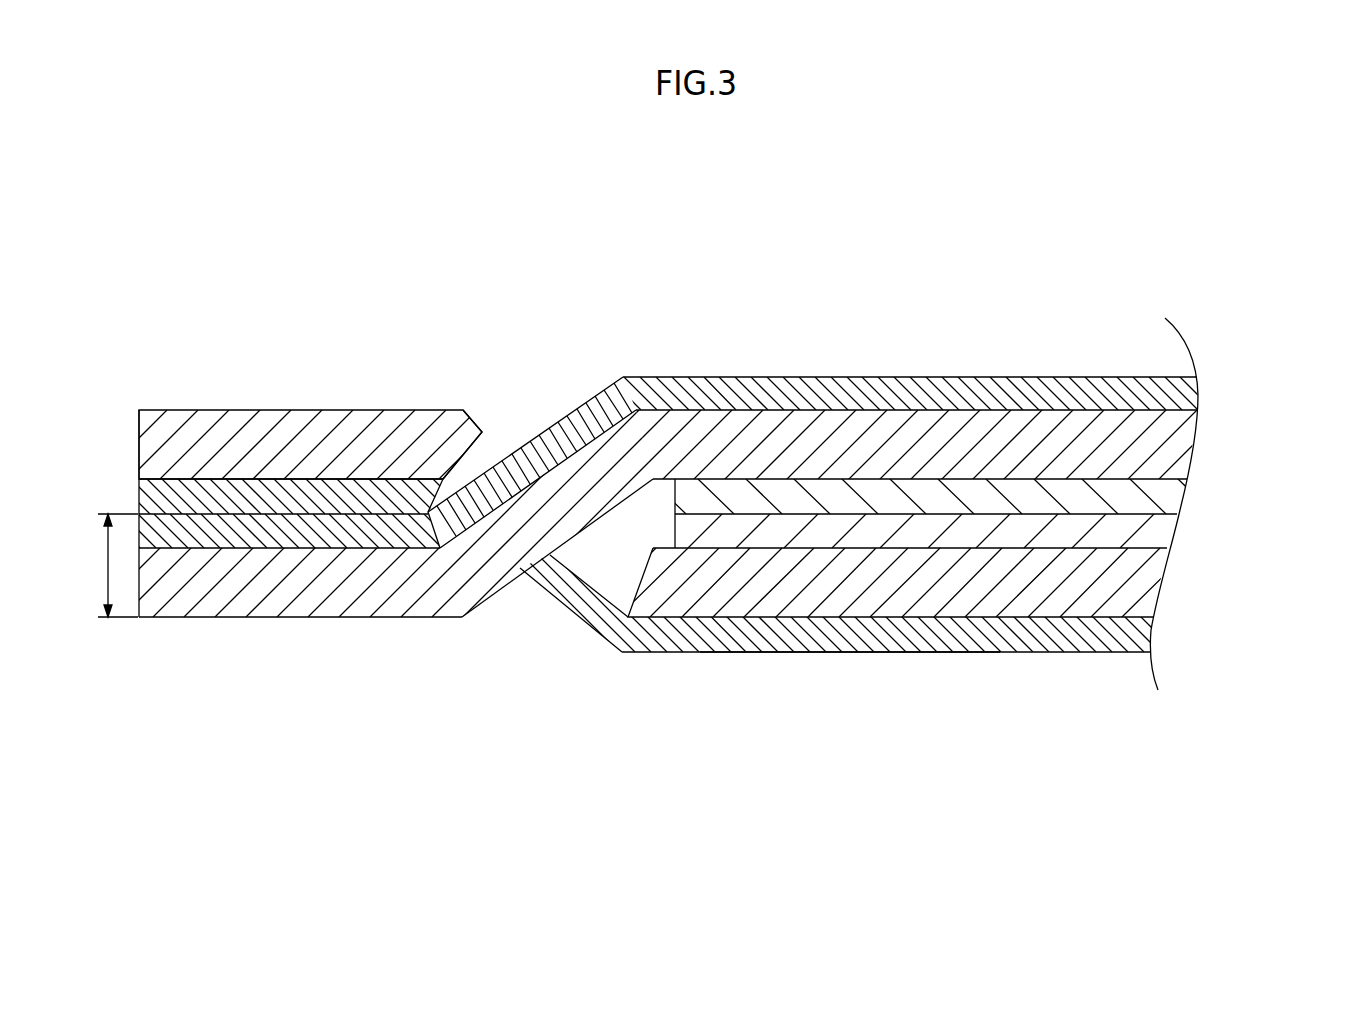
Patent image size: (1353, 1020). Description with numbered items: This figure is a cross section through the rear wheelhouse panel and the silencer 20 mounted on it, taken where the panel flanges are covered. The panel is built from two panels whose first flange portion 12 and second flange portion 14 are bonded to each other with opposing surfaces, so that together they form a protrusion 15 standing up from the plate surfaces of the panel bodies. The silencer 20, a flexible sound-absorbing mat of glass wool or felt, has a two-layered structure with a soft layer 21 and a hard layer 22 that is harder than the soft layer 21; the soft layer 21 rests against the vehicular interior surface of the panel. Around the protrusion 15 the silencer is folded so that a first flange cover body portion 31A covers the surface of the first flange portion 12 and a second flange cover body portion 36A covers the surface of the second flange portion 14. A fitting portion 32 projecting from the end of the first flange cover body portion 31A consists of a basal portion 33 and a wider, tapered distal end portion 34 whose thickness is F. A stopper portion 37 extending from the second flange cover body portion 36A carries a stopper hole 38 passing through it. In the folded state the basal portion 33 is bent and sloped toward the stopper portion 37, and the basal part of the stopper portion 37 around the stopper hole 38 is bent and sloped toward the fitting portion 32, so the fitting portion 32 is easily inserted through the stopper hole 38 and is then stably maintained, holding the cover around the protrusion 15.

The silencer 20 is at (705, 336).
The first flange portion 12 is at (1127, 497).
The second flange portion 14 is at (1123, 531).
The protrusion 15 is at (1263, 477).
The soft layer 21 is at (1000, 596).
The hard layer 22 is at (1097, 654).
The first flange cover body portion 31A is at (943, 375).
The fitting portion 32 is at (528, 753).
The basal portion 33 is at (502, 567).
The distal end portion 34 is at (343, 600).
The second flange cover body portion 36A is at (825, 654).
The stopper portion 37 is at (207, 425).
The stopper hole 38 is at (477, 450).